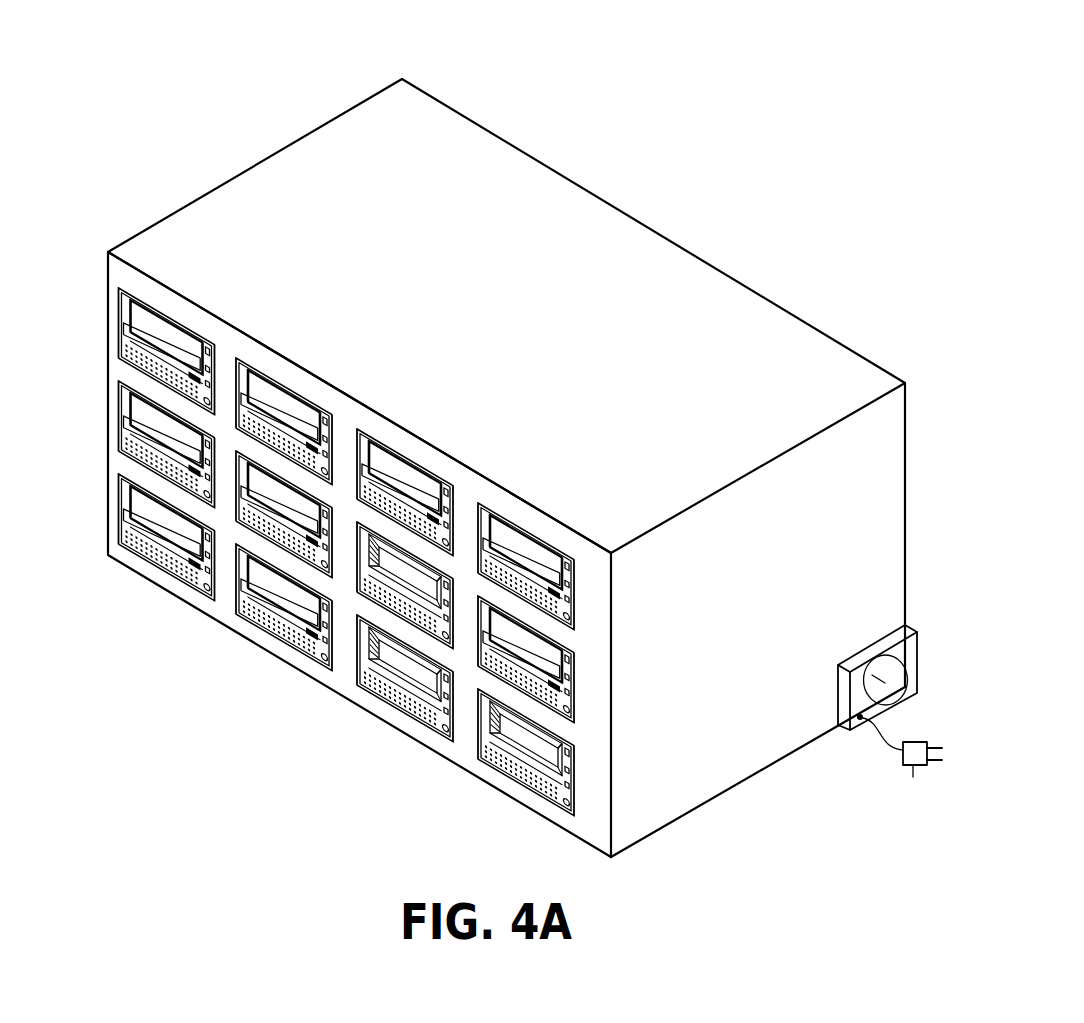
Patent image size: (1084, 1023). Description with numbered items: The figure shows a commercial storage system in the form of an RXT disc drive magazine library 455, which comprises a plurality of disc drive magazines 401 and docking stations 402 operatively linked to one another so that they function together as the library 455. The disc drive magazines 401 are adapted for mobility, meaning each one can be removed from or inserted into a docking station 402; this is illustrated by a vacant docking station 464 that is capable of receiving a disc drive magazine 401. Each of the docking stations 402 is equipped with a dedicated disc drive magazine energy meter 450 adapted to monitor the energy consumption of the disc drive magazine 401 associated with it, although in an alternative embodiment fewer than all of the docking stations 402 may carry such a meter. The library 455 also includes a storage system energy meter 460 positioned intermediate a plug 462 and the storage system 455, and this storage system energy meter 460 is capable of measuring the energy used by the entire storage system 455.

The RXT disc drive magazine library 455 is at (326, 60).
The disc drive magazine 401 is at (130, 313).
The docking station 402 is at (165, 312).
The disc drive magazine energy meter 450 is at (447, 740).
The vacant docking station 464 is at (580, 783).
The storage system energy meter 460 is at (860, 688).
The plug 462 is at (913, 770).